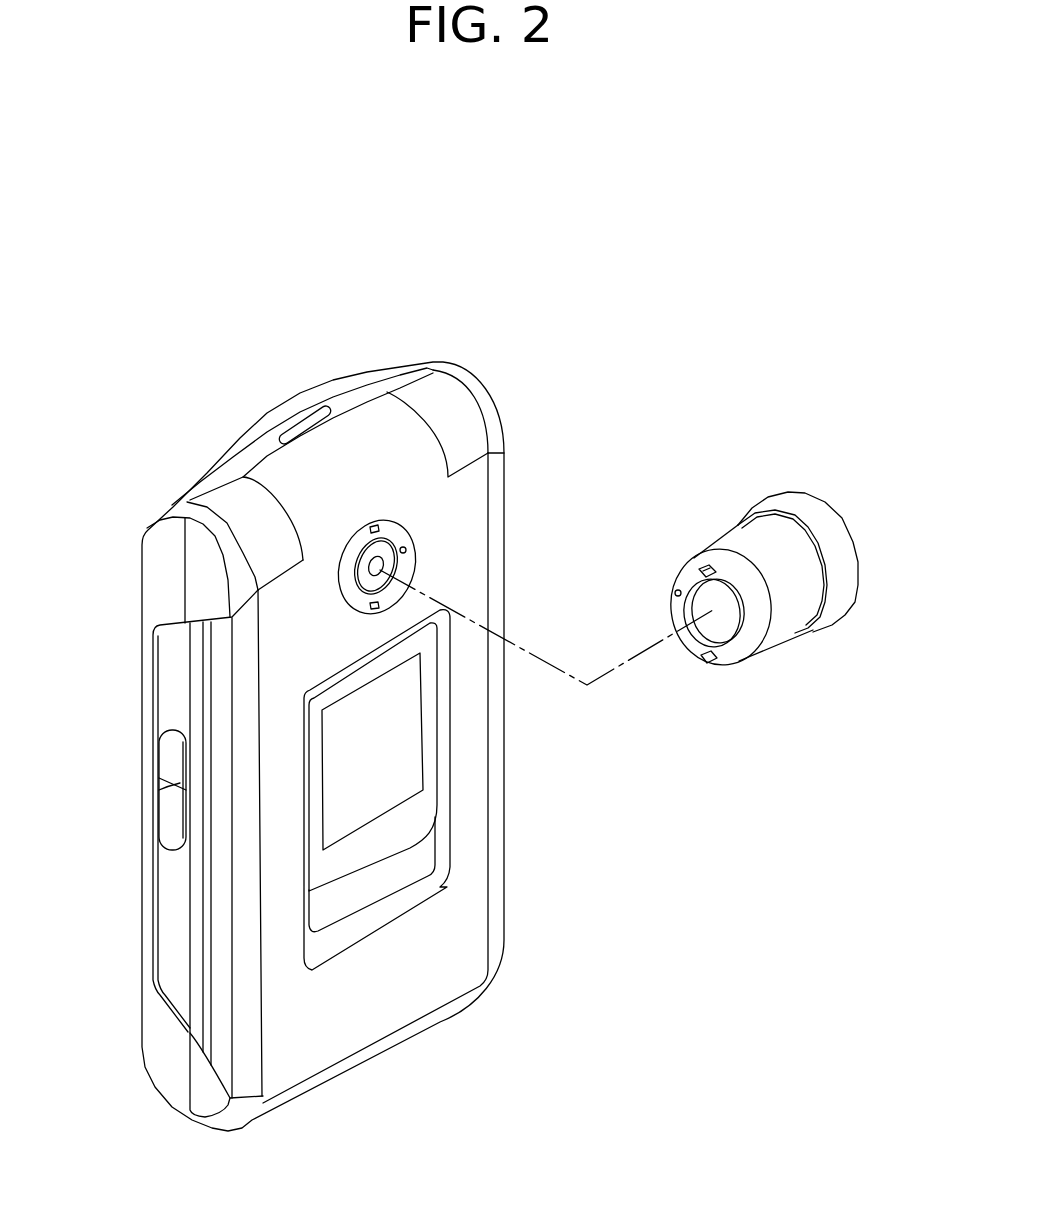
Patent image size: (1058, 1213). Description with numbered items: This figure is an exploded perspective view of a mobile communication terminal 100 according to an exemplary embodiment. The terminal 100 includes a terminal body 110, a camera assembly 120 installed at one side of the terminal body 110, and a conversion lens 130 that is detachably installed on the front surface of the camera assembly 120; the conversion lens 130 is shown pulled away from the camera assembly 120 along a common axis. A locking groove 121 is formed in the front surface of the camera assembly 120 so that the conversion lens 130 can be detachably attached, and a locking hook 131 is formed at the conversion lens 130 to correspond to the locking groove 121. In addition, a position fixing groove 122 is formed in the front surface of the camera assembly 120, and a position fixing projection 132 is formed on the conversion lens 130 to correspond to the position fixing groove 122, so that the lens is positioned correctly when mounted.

The mobile communication terminal 100 is at (655, 363).
The terminal body 110 is at (175, 887).
The camera assembly 120 is at (408, 522).
The locking groove 121 is at (374, 524).
The position fixing groove 122 is at (407, 550).
The conversion lens 130 is at (834, 505).
The locking hook 131 is at (707, 664).
The position fixing projection 132 is at (675, 594).